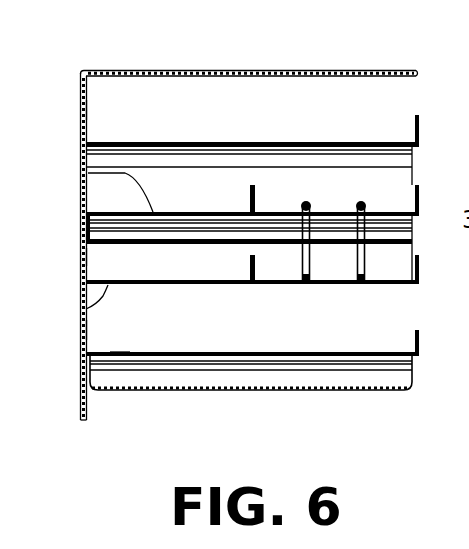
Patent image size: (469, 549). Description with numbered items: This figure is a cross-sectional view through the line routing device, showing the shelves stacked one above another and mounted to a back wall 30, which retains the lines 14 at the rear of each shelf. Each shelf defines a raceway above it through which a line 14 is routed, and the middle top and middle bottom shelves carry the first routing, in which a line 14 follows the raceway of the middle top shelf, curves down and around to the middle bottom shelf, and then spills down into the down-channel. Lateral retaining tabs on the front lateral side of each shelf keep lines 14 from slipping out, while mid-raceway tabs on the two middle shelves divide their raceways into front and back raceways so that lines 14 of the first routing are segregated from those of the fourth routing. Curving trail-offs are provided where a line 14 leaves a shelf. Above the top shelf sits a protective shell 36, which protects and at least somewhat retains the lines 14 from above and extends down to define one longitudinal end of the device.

The line 14 is at (360, 202).
The back wall 30 is at (83, 262).
The protective shell 36 is at (292, 71).